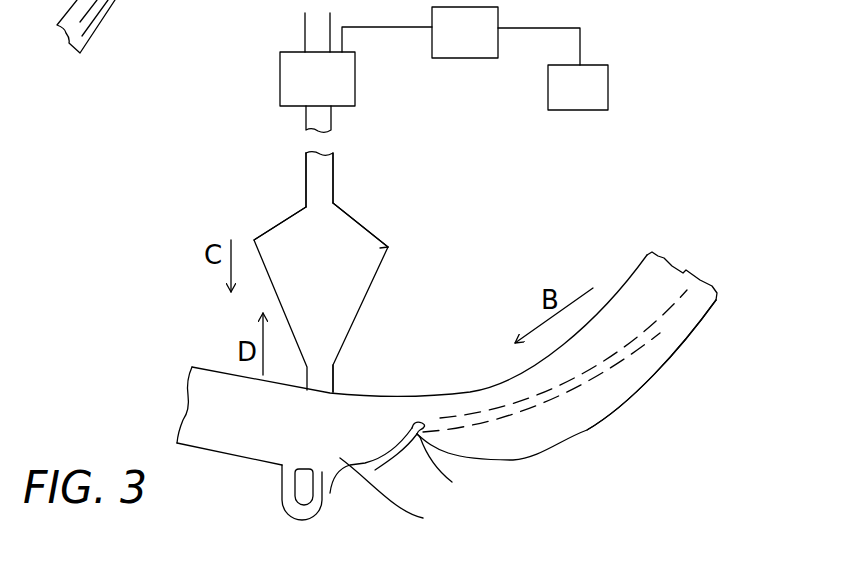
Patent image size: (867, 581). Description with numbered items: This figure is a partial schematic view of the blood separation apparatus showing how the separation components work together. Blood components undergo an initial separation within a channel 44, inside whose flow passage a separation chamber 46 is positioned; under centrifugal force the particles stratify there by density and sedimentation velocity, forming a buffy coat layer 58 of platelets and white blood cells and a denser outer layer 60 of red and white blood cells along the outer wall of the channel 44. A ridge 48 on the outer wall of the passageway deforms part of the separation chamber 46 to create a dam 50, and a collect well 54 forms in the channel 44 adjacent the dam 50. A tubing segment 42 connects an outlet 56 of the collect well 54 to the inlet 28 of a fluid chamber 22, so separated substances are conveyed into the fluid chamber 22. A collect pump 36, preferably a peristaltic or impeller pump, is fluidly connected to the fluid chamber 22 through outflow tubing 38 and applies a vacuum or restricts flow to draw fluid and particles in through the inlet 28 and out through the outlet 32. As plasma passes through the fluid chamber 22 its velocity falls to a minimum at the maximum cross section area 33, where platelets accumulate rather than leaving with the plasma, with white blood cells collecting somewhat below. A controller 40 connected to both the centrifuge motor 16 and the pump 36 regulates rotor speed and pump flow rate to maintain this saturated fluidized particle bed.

The centrifuge motor 16 is at (560, 110).
The fluid chamber 22 is at (373, 280).
The inlet 28 is at (333, 365).
The outlet 32 is at (333, 205).
The maximum cross section area 33 is at (380, 248).
The collect pump 36 is at (355, 85).
The outflow tubing 38 is at (333, 175).
The controller 40 is at (447, 58).
The tubing segment 42 is at (279, 470).
The channel 44 is at (640, 268).
The separation chamber 46 is at (407, 388).
The ridge 48 is at (392, 463).
The dam 50 is at (415, 427).
The collect well 54 is at (423, 518).
The outlet 56 is at (325, 497).
The buffy coat layer 58 is at (553, 397).
The outer layer 60 is at (633, 377).